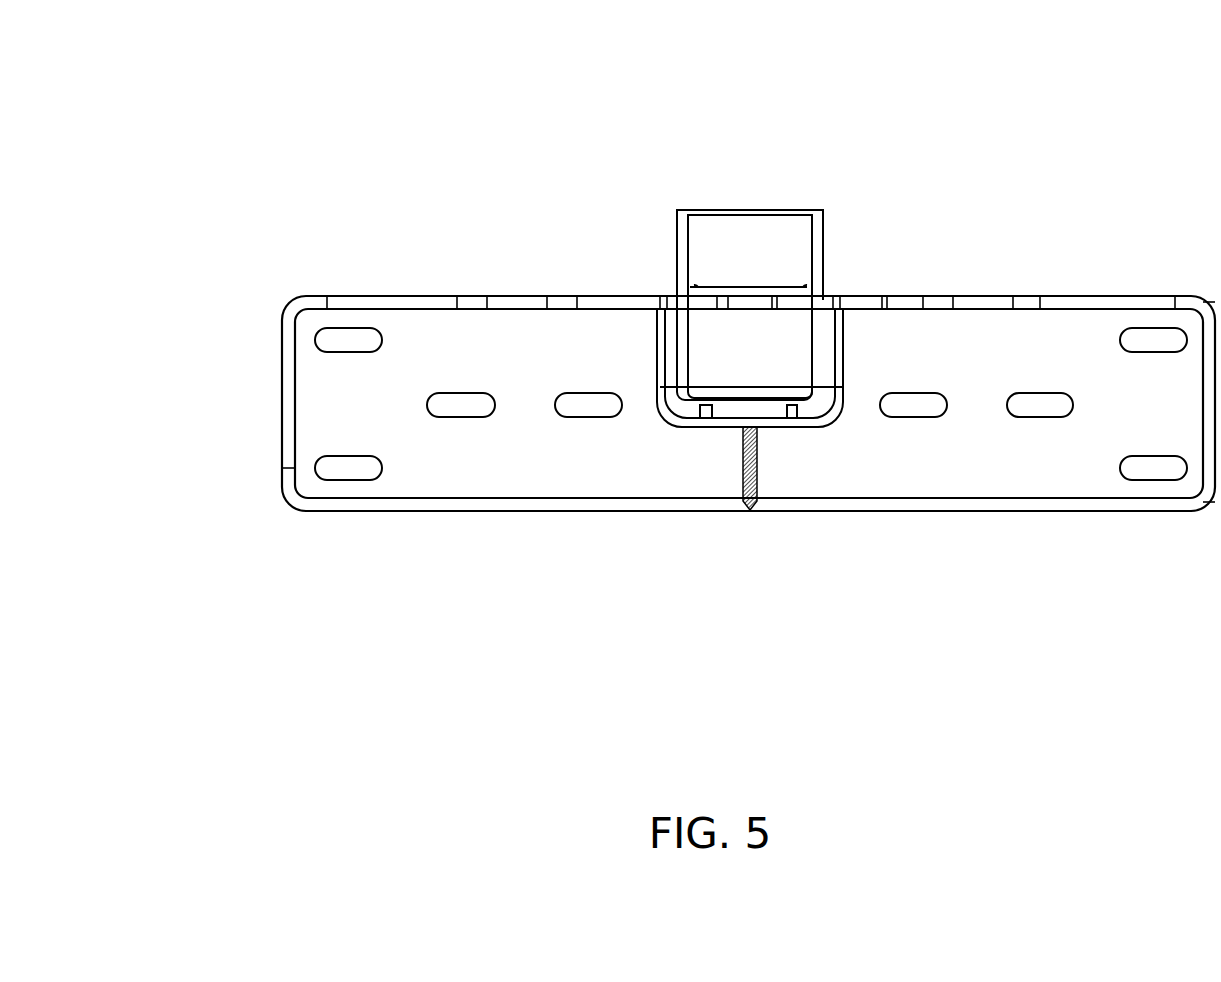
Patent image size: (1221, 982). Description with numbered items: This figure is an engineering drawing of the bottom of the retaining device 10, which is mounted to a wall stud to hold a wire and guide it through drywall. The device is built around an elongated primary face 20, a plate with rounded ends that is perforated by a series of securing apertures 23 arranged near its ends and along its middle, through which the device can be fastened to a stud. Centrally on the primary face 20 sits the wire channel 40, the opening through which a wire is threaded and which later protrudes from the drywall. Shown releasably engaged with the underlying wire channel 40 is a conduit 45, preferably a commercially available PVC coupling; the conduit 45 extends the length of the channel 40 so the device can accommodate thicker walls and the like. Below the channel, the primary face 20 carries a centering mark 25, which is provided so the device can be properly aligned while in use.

The retaining device 10 is at (305, 125).
The primary face 20 is at (1147, 424).
The securing aperture 23 is at (1045, 400).
The centering mark 25 is at (757, 477).
The wire channel 40 is at (705, 363).
The conduit 45 is at (680, 243).